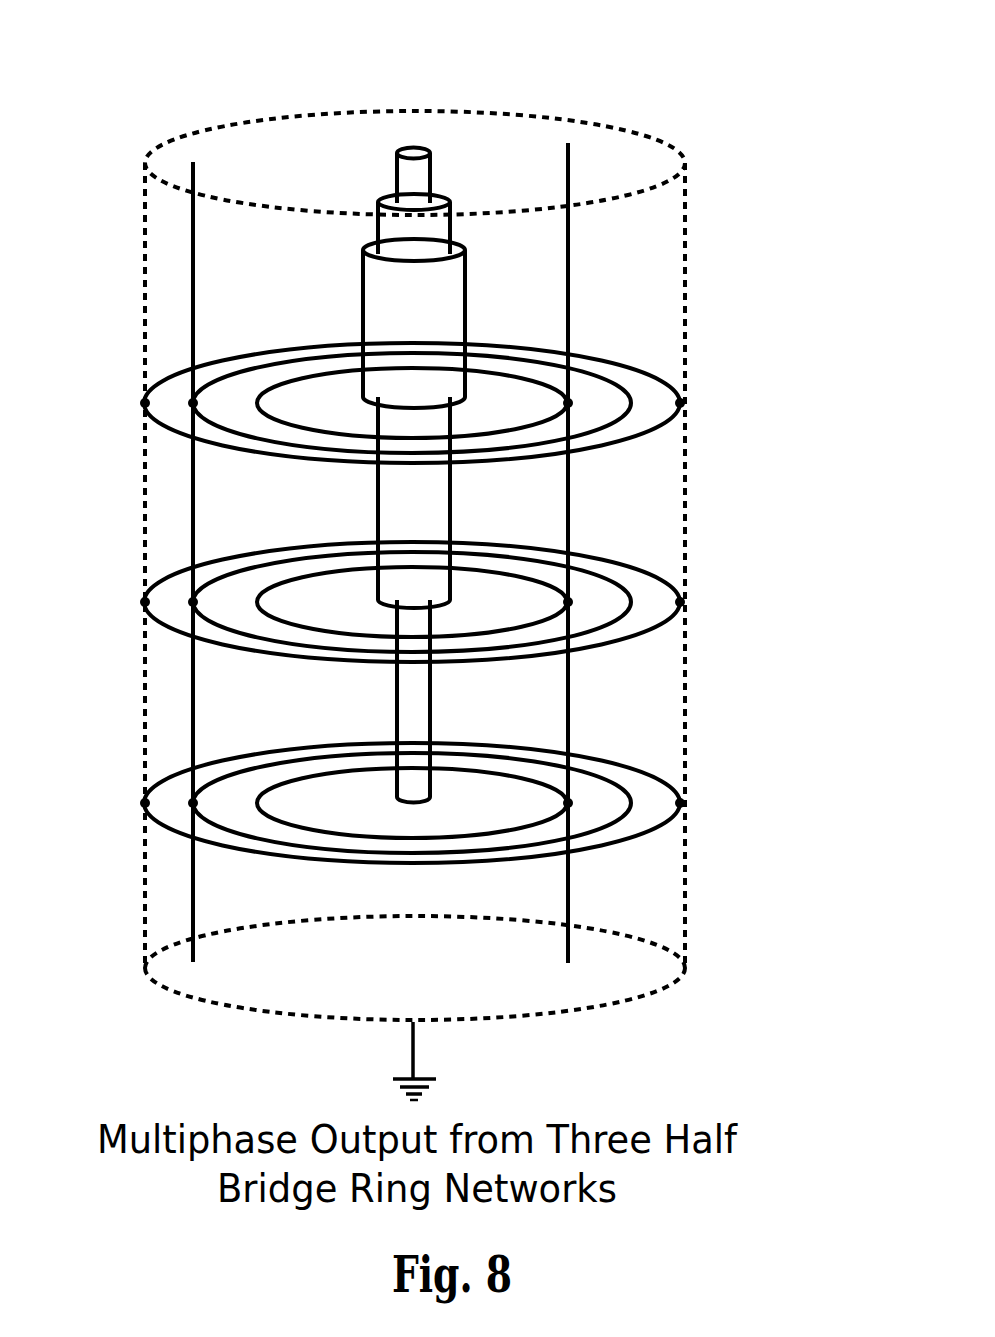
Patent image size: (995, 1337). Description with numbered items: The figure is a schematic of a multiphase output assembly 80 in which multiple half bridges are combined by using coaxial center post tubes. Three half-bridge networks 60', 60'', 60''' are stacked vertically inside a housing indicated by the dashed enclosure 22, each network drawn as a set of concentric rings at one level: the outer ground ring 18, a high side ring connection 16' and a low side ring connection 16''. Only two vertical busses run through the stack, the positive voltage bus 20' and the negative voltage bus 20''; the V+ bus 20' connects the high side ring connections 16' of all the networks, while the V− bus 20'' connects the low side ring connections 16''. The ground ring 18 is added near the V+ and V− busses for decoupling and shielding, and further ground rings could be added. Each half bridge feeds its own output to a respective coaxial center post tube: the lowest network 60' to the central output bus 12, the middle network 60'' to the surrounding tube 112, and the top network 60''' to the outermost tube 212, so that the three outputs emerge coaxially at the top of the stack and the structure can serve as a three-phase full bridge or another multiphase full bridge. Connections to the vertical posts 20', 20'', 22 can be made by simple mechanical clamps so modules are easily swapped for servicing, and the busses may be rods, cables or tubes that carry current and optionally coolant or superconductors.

The multiphase output assembly of three half bridge ring networks 80 is at (186, 103).
The vertical post 22 is at (146, 922).
The positive voltage bus 20' is at (245, 579).
The negative voltage bus 20'' is at (534, 569).
The ground ring 18 is at (652, 372).
The high side ring connection 16' is at (427, 579).
The low side ring connection 16'' is at (412, 559).
The coaxial center post tube 212 is at (383, 303).
The coaxial center post tube 112 is at (392, 510).
The central output bus 12 is at (410, 708).
The half-bridge network 60''' is at (498, 421).
The half-bridge network 60'' is at (499, 621).
The half-bridge network 60' is at (500, 823).